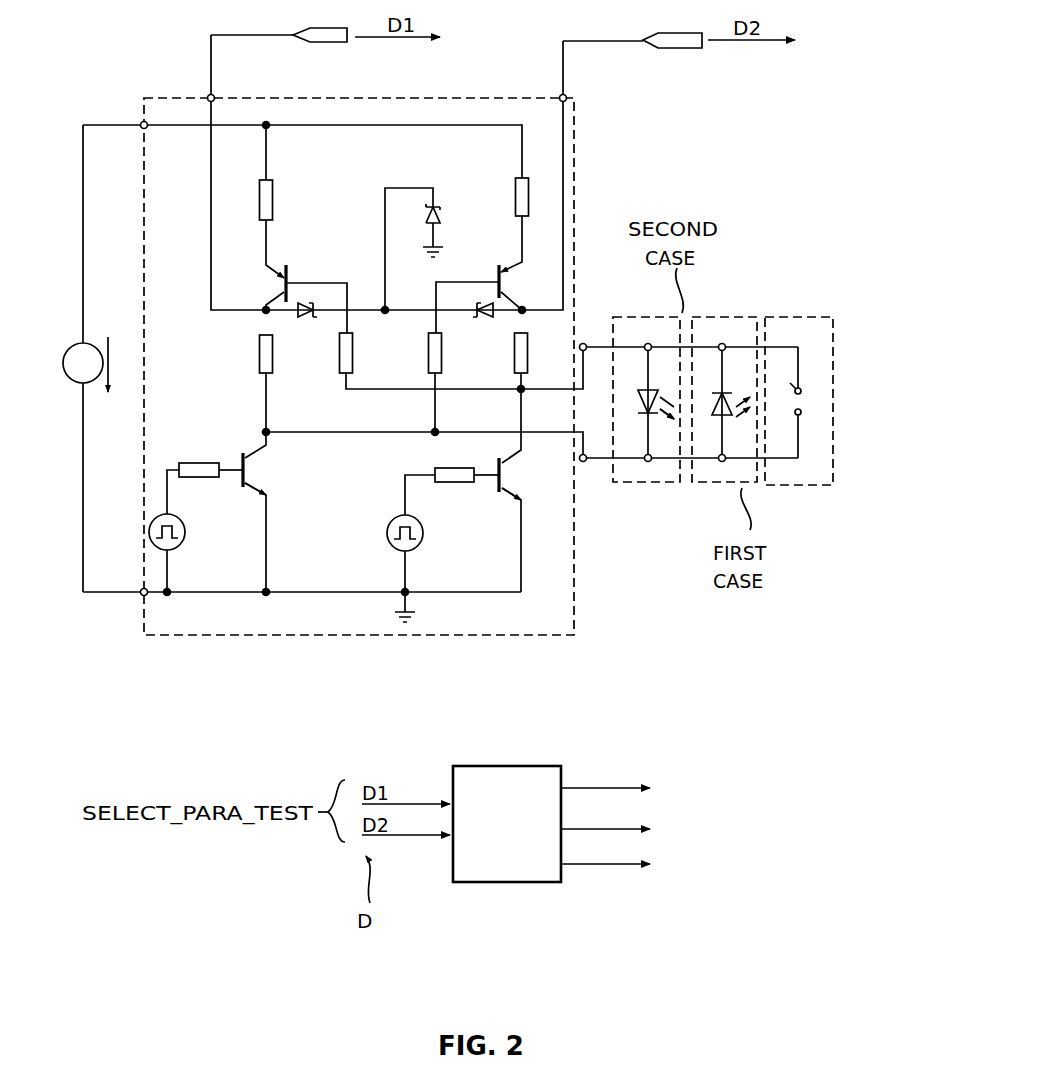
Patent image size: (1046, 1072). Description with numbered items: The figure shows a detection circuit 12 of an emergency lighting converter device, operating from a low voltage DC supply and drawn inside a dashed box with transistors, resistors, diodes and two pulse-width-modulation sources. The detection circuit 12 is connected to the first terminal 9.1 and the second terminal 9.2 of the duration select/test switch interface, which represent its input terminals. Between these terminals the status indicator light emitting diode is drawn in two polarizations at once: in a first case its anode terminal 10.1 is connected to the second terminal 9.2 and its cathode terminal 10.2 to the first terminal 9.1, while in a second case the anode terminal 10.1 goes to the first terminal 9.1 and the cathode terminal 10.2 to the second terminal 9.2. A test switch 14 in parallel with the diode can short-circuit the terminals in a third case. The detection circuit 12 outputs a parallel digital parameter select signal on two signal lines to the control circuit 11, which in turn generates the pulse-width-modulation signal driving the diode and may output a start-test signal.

The first terminal 9.1 is at (584, 338).
The second terminal 9.2 is at (585, 468).
The anode terminal 10.1 is at (641, 340).
The cathode terminal 10.2 is at (720, 340).
The control circuit 11 is at (485, 883).
The detection circuit 12 is at (293, 637).
The test switch 14 is at (818, 317).